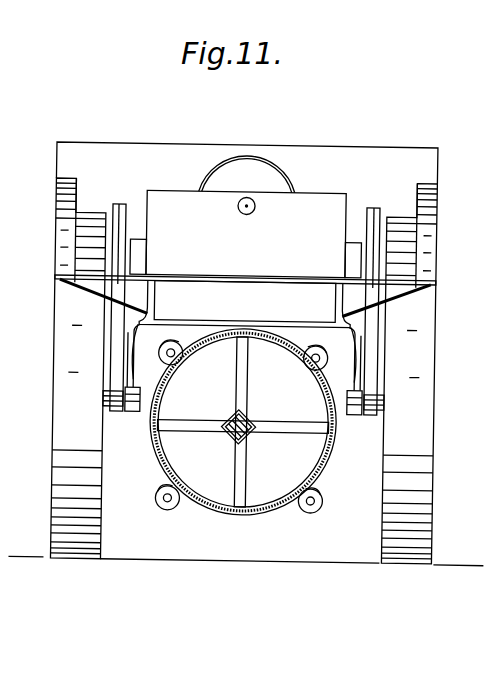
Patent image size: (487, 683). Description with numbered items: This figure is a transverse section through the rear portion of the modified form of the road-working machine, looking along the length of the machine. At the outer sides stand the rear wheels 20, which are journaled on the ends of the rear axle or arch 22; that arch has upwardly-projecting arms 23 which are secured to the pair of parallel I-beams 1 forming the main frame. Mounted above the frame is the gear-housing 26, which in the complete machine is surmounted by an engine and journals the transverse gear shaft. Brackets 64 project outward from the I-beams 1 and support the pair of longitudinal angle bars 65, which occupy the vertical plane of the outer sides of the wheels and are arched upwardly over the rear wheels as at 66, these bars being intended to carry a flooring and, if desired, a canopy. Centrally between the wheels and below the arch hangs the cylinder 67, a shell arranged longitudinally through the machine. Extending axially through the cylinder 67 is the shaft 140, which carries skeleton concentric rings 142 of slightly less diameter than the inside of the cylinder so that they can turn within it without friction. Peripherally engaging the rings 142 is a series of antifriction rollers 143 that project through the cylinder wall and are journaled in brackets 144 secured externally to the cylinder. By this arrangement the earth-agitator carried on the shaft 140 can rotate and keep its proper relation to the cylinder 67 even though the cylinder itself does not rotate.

The I-beams 1 is at (205, 305).
The rear wheels 20 is at (62, 440).
The axle or arch 22 is at (149, 404).
The upwardly-projecting arms 23 is at (131, 347).
The gear-housing 26 is at (170, 194).
The brackets 64 is at (91, 291).
The longitudinal angle bars 65 is at (57, 283).
The upward arch of angle bars 66 is at (62, 182).
The cylinder 67 is at (244, 512).
The shaft 140 is at (239, 413).
The skeleton concentric rings 142 is at (173, 475).
The antifriction rollers 143 is at (173, 501).
The brackets 144 is at (318, 500).